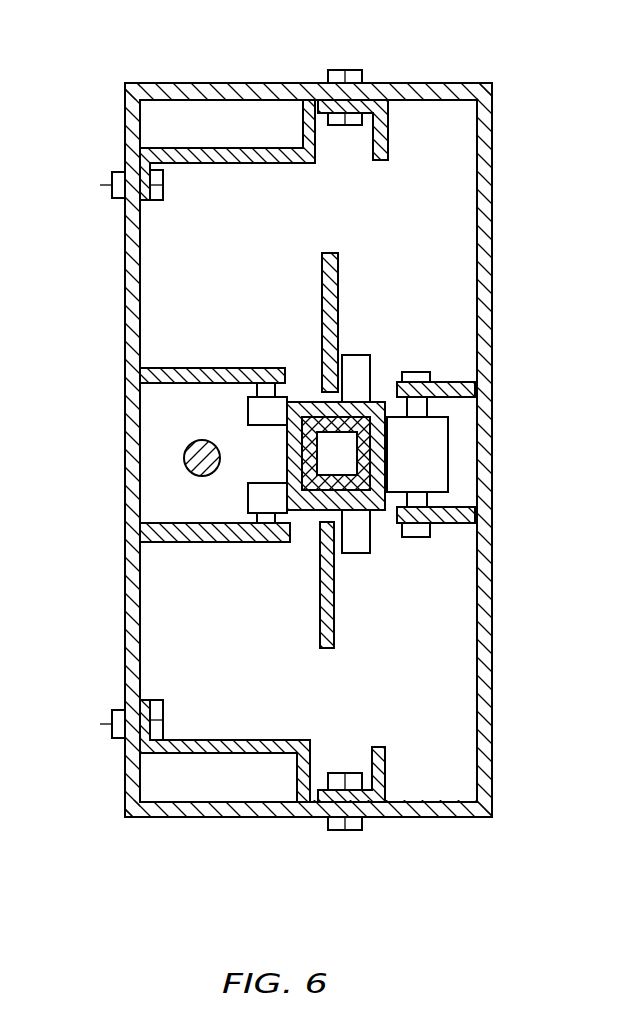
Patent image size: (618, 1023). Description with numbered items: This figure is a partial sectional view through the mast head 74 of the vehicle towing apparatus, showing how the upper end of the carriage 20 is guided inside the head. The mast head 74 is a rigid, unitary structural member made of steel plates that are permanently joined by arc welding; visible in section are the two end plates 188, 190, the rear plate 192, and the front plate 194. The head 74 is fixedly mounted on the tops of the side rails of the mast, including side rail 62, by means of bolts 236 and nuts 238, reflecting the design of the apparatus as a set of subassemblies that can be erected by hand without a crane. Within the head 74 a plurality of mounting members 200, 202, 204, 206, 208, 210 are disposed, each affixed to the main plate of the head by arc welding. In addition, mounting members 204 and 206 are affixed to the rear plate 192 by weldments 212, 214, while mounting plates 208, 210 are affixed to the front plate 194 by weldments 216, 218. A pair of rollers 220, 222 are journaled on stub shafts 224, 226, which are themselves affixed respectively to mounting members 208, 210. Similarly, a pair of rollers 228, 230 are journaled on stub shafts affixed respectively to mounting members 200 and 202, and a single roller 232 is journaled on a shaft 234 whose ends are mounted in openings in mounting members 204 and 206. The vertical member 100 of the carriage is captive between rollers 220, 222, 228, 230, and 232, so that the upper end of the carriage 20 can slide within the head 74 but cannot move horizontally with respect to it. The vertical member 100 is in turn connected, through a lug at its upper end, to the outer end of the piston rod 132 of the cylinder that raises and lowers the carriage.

The mast head 74 is at (232, 60).
The end plate 190 is at (285, 90).
The end plate 188 is at (235, 817).
The rear plate 192 is at (492, 190).
The front plate 194 is at (125, 283).
The side rail 62 is at (300, 163).
The bolts 236 is at (357, 72).
The nuts 238 is at (165, 190).
The mounting member 210 is at (222, 368).
The weldment 218 is at (140, 370).
The mounting member 208 is at (205, 545).
The weldment 216 is at (142, 545).
The roller 222 is at (248, 413).
The stub shaft 226 is at (284, 392).
The roller 220 is at (248, 500).
The stub shaft 224 is at (272, 545).
The piston rod 132 is at (192, 450).
The carriage 20 is at (278, 452).
The vertical member 100 is at (372, 402).
The mounting member 202 is at (322, 261).
The roller 230 is at (355, 356).
The mounting member 200 is at (328, 650).
The roller 228 is at (355, 553).
The roller 232 is at (440, 466).
The mounting member 206 is at (445, 382).
The mounting member 204 is at (455, 525).
The shaft 234 is at (440, 492).
The weldment 214 is at (490, 380).
The weldment 212 is at (488, 530).